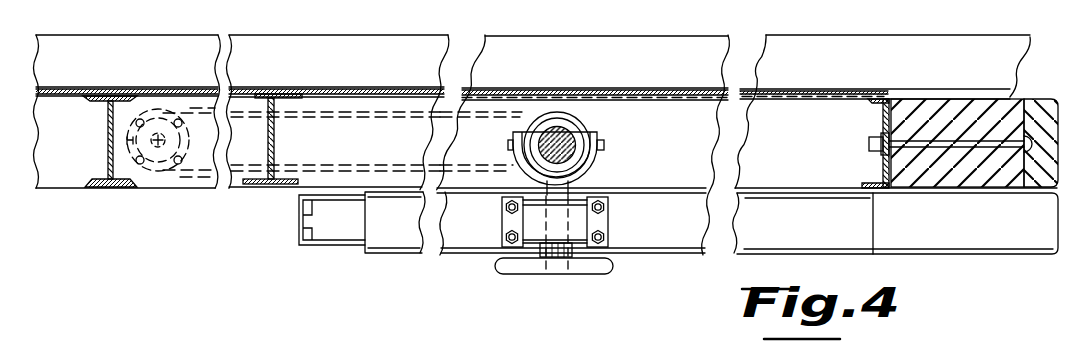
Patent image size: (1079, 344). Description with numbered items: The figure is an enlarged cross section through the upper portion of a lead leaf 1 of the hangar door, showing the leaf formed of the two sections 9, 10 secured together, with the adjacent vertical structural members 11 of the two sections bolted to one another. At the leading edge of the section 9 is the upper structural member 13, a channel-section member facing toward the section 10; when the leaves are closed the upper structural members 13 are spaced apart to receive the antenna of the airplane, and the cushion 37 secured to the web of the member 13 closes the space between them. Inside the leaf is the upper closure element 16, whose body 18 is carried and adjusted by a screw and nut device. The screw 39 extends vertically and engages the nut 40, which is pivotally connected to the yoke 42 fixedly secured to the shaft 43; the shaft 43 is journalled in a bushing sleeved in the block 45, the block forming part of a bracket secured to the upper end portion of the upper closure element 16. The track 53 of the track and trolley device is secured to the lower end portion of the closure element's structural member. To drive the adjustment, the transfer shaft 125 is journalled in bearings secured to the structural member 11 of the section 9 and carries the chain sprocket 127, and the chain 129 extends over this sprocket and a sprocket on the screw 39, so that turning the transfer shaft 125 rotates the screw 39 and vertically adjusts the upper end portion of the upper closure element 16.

The lead leaf 1 is at (642, 110).
The section 9 is at (798, 110).
The section 10 is at (152, 181).
The vertical structural member 11 is at (107, 118).
The upper structural member 13 is at (878, 105).
The upper closure element 16 is at (840, 265).
The body 18 is at (767, 241).
The cushion 37 is at (1032, 110).
The screw 39 is at (573, 143).
The nut 40 is at (566, 118).
The yoke 42 is at (598, 164).
The shaft 43 is at (592, 188).
The block 45 is at (578, 224).
The track 53 is at (325, 246).
The transfer shaft 125 is at (126, 141).
The chain sprocket 127 is at (168, 177).
The chain 129 is at (325, 117).